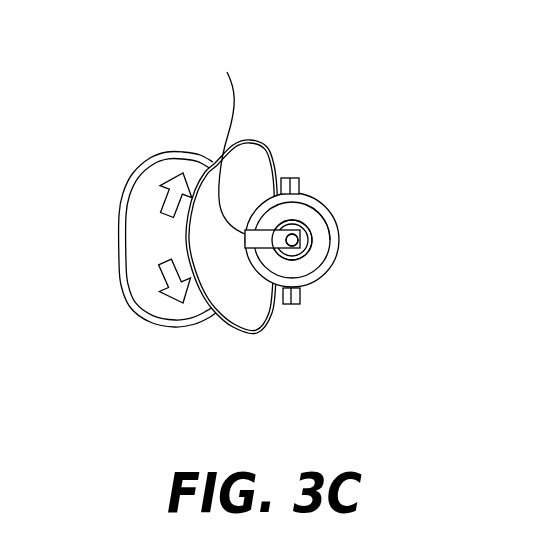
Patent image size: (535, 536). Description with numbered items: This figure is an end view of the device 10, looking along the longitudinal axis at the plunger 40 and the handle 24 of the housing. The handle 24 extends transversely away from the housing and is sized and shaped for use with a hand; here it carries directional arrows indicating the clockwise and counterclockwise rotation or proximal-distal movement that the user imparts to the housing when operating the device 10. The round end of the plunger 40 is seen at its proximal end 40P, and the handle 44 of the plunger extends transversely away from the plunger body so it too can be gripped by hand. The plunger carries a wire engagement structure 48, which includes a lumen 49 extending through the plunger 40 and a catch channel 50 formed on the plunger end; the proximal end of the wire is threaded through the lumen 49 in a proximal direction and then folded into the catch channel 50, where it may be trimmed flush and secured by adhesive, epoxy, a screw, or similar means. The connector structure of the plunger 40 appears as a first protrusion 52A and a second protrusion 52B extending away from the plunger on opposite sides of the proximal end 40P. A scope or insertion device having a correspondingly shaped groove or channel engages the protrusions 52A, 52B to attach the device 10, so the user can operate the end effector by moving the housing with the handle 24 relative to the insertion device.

The device 10 is at (298, 92).
The handle 24 is at (119, 280).
The plunger 40 is at (375, 275).
The proximal end 40P is at (327, 225).
The handle 44 is at (249, 333).
The wire engagement structure 48 is at (274, 256).
The lumen 49 is at (304, 223).
The catch channel 50 is at (222, 139).
The first protrusion 52A is at (293, 178).
The second protrusion 52B is at (292, 304).